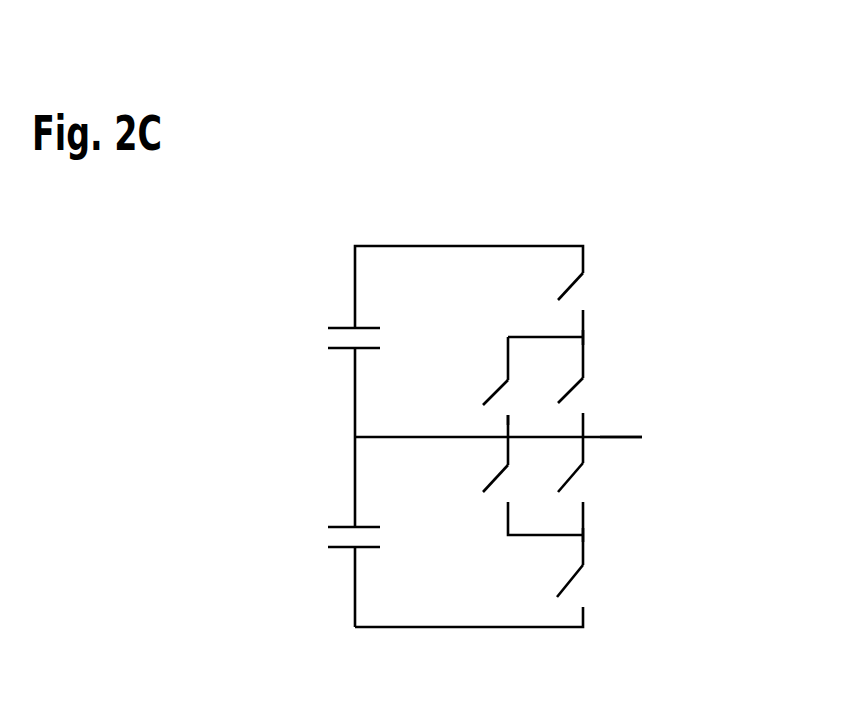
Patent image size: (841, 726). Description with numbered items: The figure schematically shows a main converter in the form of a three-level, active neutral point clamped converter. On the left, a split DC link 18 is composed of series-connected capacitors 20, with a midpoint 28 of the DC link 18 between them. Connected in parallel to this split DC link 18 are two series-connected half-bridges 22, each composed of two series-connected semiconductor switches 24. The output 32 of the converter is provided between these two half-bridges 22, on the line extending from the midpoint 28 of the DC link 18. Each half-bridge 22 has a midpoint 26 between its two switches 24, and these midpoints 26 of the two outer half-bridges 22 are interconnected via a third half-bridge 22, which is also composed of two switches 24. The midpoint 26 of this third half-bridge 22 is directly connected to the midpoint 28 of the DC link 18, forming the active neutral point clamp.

The DC link 18 is at (284, 645).
The capacitor 20 is at (346, 328).
The half-bridge 22 is at (622, 364).
The semiconductor switch 24 is at (572, 292).
The midpoint 26 is at (583, 336).
The midpoint of the DC link 28 is at (355, 437).
The output 32 is at (618, 436).